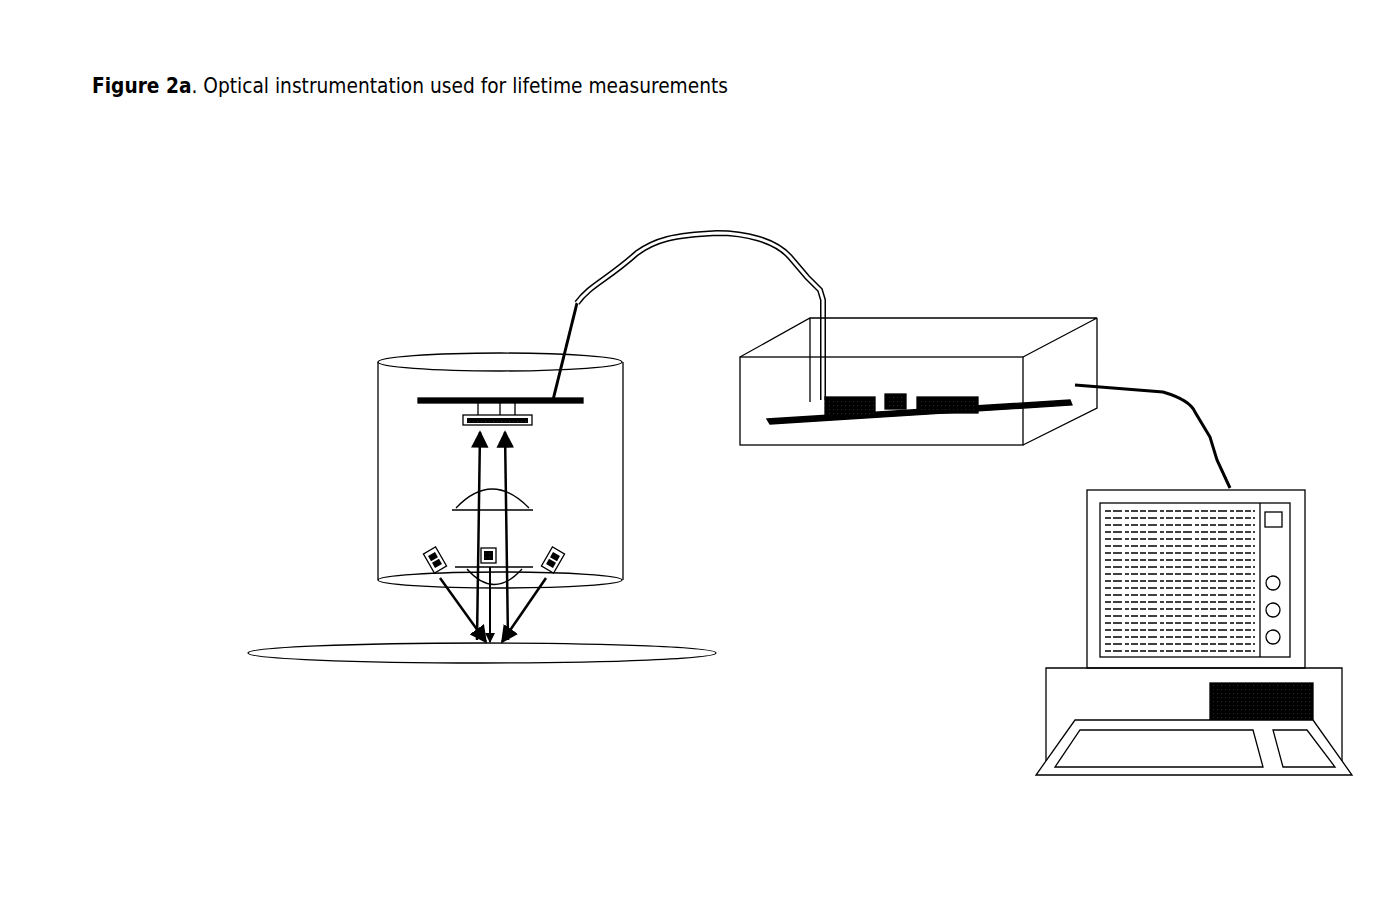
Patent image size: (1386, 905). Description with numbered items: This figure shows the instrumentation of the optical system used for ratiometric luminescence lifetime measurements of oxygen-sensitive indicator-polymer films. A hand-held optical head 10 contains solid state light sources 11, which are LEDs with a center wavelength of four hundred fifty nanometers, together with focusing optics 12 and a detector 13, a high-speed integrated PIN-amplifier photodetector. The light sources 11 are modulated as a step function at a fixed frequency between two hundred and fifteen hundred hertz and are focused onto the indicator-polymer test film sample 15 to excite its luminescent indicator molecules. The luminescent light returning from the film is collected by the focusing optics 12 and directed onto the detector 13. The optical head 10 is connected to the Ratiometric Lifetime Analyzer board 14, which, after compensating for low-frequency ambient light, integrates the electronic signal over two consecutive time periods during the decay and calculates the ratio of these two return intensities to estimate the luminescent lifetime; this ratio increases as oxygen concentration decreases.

The optical head 10 is at (415, 362).
The solid state light sources 11 is at (427, 550).
The focusing optics 12 is at (513, 510).
The detector 13 is at (497, 402).
The Ratiometric Lifetime Analyzer board 14 is at (973, 392).
The indicator-polymer test film sample 15 is at (332, 655).